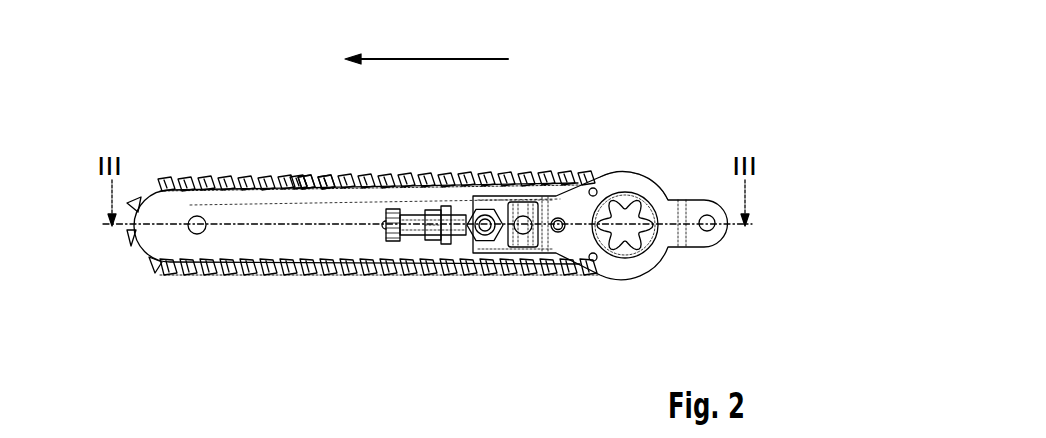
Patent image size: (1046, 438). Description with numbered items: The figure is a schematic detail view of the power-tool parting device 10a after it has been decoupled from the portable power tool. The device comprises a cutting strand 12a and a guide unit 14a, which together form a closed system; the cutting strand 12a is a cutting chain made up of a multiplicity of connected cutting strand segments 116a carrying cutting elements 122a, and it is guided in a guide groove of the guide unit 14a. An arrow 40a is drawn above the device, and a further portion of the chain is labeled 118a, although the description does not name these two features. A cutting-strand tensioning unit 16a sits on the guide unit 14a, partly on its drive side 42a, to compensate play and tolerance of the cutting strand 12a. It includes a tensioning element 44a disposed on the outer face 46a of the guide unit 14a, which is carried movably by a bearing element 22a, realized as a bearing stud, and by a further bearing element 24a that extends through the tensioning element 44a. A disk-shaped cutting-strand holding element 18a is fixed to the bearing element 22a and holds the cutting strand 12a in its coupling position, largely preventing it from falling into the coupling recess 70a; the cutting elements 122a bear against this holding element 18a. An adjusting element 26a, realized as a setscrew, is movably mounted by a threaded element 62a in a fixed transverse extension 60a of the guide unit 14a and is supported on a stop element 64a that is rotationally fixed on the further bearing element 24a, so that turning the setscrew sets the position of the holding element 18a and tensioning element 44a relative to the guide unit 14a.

The power-tool parting device 10a is at (439, 203).
The cutting strand 12a is at (182, 180).
The guide unit 14a is at (357, 226).
The cutting-strand tensioning unit 16a is at (379, 251).
The cutting-strand holding element 18a is at (664, 198).
The bearing element 22a is at (560, 217).
The further bearing element 24a is at (487, 216).
The adjusting element 26a is at (392, 212).
The cutting direction arrow 40a is at (437, 58).
The drive side 42a is at (705, 272).
The tensioning element 44a is at (623, 183).
The outer face 46a is at (297, 241).
The transverse extension 60a is at (433, 239).
The threaded element 62a is at (443, 217).
The stop element 64a is at (468, 241).
The coupling recess 70a is at (612, 250).
The cutting strand segments 116a is at (313, 162).
The drive link 118a is at (298, 178).
The cutting elements 122a is at (295, 178).